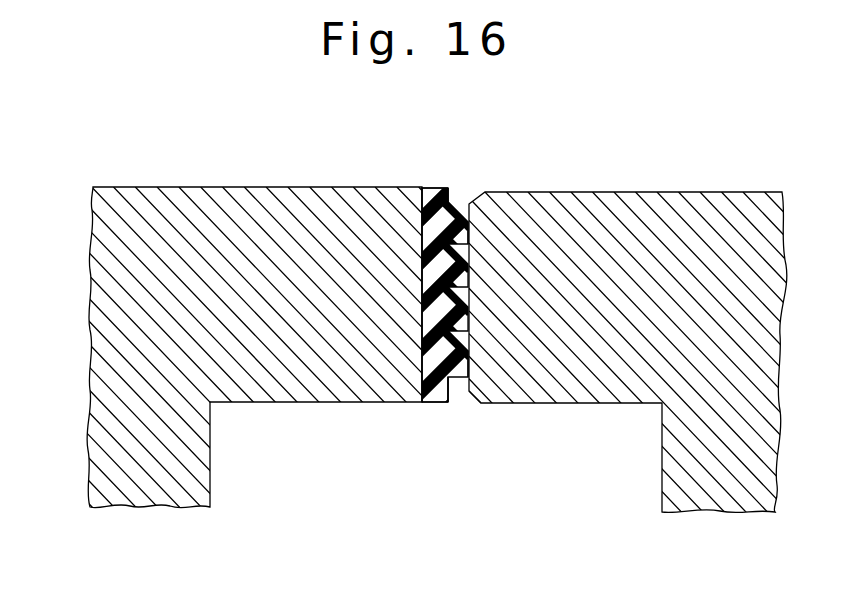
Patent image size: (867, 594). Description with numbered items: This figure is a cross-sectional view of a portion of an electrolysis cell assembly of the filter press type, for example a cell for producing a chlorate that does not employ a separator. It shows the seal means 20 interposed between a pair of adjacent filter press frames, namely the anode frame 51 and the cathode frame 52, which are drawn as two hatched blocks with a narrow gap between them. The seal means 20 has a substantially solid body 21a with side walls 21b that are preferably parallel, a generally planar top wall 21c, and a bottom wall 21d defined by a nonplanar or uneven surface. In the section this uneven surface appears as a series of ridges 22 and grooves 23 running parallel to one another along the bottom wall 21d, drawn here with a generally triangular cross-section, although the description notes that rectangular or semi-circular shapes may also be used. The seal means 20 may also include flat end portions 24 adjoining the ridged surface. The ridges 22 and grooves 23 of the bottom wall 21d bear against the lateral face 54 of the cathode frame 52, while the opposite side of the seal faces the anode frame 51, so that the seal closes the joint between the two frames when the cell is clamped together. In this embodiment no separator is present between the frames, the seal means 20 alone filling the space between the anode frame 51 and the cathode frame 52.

The seal means 20 is at (470, 165).
The substantially solid body 21a is at (420, 208).
The side walls 21b is at (437, 188).
The top wall 21c is at (422, 290).
The bottom wall 21d is at (428, 435).
The ridges 22 is at (469, 227).
The grooves 23 is at (449, 339).
The flat end portions 24 is at (453, 203).
The anode frame 51 is at (247, 187).
The cathode frame 52 is at (610, 192).
The lateral face 54 is at (464, 378).